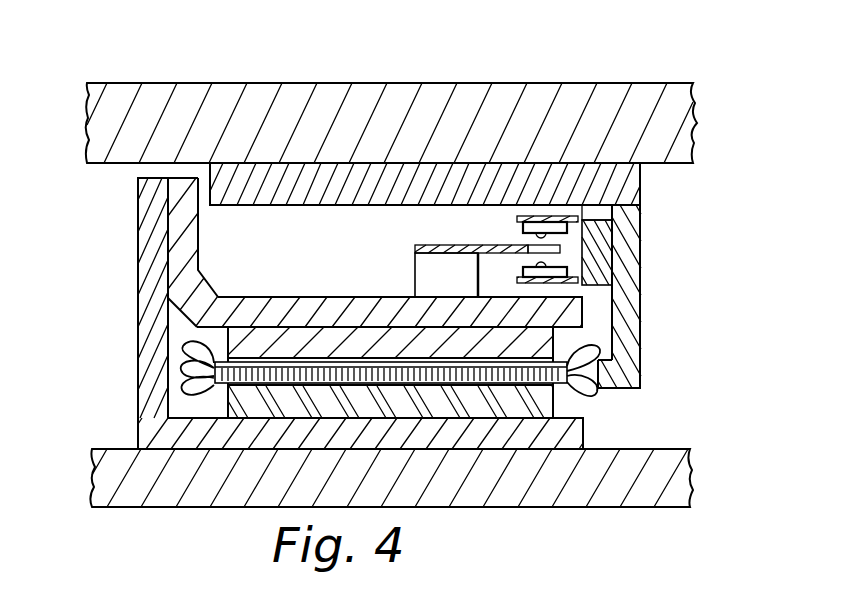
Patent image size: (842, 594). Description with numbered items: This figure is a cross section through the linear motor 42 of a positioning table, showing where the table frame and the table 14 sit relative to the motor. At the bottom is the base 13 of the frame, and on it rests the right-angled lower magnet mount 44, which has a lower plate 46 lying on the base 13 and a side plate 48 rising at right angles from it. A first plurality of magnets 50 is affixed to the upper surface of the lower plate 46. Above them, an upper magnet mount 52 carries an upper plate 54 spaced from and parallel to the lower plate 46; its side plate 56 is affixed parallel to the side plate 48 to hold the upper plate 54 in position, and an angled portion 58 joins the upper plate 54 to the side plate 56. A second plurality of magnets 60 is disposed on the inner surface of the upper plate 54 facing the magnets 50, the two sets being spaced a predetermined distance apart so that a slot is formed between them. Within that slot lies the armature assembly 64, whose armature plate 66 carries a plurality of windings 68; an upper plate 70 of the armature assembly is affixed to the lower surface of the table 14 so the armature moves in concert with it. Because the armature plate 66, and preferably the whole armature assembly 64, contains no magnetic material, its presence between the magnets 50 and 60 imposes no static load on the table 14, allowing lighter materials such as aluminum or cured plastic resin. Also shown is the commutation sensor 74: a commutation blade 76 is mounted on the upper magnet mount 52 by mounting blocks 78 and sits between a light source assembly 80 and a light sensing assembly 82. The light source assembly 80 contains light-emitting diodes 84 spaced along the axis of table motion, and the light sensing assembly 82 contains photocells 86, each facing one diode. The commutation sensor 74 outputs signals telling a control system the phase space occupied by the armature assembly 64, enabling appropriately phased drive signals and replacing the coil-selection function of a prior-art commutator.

The base 13 is at (560, 497).
The table 14 is at (495, 98).
The linear motor 42 is at (672, 212).
The lower magnet mount 44 is at (175, 430).
The lower plate 46 is at (565, 438).
The side plate 48 is at (162, 224).
The first plurality of magnets 50 is at (518, 405).
The upper magnet mount 52 is at (262, 305).
The upper plate 54 is at (555, 314).
The side plate 56 is at (198, 238).
The angled portion 58 is at (190, 322).
The second plurality of magnets 60 is at (325, 345).
The armature assembly 64 is at (672, 352).
The armature plate 66 is at (272, 372).
The windings 68 is at (183, 363).
The upper plate 70 is at (235, 187).
The commutation sensor 74 is at (420, 234).
The commutation blade 76 is at (498, 246).
The mounting blocks 78 is at (415, 270).
The light source assembly 80 is at (523, 227).
The light sensing assembly 82 is at (560, 265).
The light-emitting diodes 84 is at (585, 208).
The photocells 86 is at (538, 262).